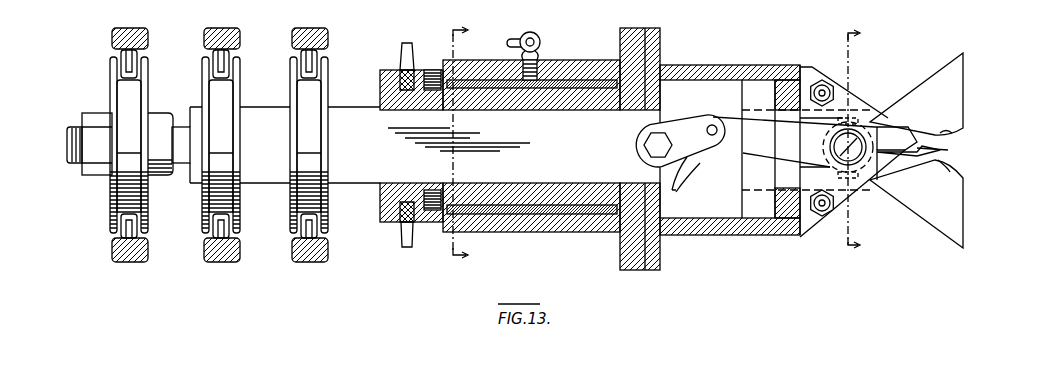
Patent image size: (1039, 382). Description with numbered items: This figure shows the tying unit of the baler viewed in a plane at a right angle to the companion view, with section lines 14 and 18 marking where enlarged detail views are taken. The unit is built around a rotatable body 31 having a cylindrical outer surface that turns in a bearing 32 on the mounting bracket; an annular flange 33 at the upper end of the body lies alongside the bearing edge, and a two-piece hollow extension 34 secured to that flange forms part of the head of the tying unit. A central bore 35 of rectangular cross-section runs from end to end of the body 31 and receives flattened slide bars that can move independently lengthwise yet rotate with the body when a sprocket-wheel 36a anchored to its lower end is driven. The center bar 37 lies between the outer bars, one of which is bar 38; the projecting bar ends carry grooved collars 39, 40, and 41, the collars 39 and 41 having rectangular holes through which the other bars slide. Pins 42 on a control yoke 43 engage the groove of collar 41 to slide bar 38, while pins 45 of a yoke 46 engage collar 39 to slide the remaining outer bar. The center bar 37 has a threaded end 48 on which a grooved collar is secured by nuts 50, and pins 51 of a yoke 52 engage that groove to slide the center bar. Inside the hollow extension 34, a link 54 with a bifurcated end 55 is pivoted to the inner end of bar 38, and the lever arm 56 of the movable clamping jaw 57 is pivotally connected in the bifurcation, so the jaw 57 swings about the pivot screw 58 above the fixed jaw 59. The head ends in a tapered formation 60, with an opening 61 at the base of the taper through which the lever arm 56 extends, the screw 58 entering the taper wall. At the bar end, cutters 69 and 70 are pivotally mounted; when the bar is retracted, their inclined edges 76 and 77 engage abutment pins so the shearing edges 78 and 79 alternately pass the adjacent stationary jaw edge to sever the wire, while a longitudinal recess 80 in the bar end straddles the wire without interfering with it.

The section line 14 is at (492, 38).
The section line 18 is at (888, 40).
The rotatable body 31 is at (522, 196).
The bearing 32 is at (510, 220).
The annular flange 33 is at (630, 55).
The hollow extension 34 is at (705, 65).
The central bore 35 is at (466, 110).
The sprocket-wheel 36a is at (412, 43).
The center bar 37 is at (193, 168).
The bar 38 is at (366, 168).
The grooved collar 39 is at (330, 65).
The grooved collar 40 is at (110, 80).
The grooved collar 41 is at (204, 62).
The pins 42 is at (238, 44).
The control yoke 43 is at (218, 262).
The pins 45 is at (320, 60).
The yoke 46 is at (307, 262).
The threaded end 48 is at (68, 146).
The nuts 50 is at (156, 120).
The pins 51 is at (124, 60).
The yoke 52 is at (128, 35).
The link 54 is at (672, 190).
The bifurcated end 55 is at (705, 140).
The lever arm 56 is at (745, 135).
The movable clamping jaw 57 is at (896, 126).
The pivot screw 58 is at (830, 147).
The fixed jaw 59 is at (900, 160).
The tapered formation 60 is at (848, 86).
The opening 61 is at (786, 100).
The cutter 69 is at (952, 90).
The cutter 70 is at (955, 197).
The inclined edge 76 is at (934, 85).
The inclined edge 77 is at (924, 205).
The shearing edge 78 is at (956, 172).
The shearing edge 79 is at (950, 135).
The longitudinal recess 80 is at (940, 150).